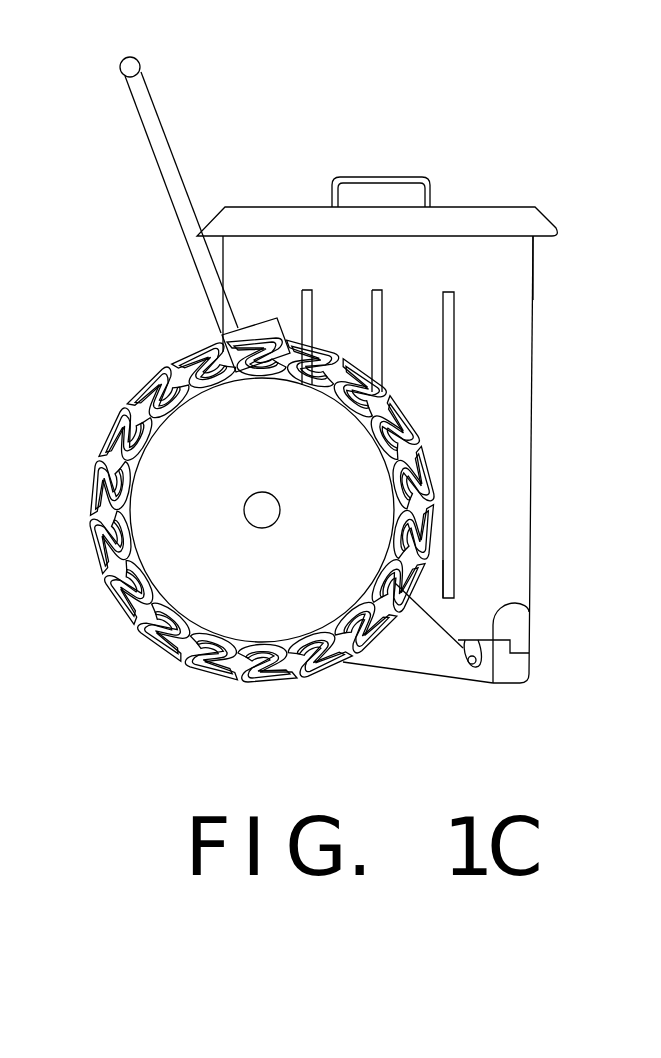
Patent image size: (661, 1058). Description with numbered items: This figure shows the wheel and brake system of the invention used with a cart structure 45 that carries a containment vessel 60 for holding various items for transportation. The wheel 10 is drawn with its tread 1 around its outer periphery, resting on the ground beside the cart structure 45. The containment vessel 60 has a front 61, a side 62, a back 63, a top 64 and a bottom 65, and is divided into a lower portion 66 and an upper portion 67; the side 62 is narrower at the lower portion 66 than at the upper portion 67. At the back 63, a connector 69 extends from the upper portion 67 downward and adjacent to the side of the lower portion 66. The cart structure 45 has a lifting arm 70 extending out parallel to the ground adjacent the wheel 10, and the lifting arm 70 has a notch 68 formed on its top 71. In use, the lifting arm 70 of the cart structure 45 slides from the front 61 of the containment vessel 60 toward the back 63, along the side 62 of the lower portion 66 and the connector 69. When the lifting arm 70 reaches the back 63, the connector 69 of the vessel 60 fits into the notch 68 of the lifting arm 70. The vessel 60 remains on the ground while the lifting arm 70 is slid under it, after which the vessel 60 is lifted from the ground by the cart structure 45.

The tread 1 is at (195, 380).
The wheel 10 is at (400, 508).
The cart structure 45 is at (222, 336).
The containment vessel 60 is at (508, 383).
The front 61 is at (222, 258).
The side 62 is at (533, 330).
The back 63 is at (523, 292).
The top 64 is at (508, 208).
The bottom 65 is at (498, 683).
The lower portion 66 is at (516, 636).
The upper portion 67 is at (531, 450).
The notch 68 is at (460, 662).
The connector 69 is at (507, 618).
The lifting arm 70 is at (402, 650).
The top 71 is at (467, 579).